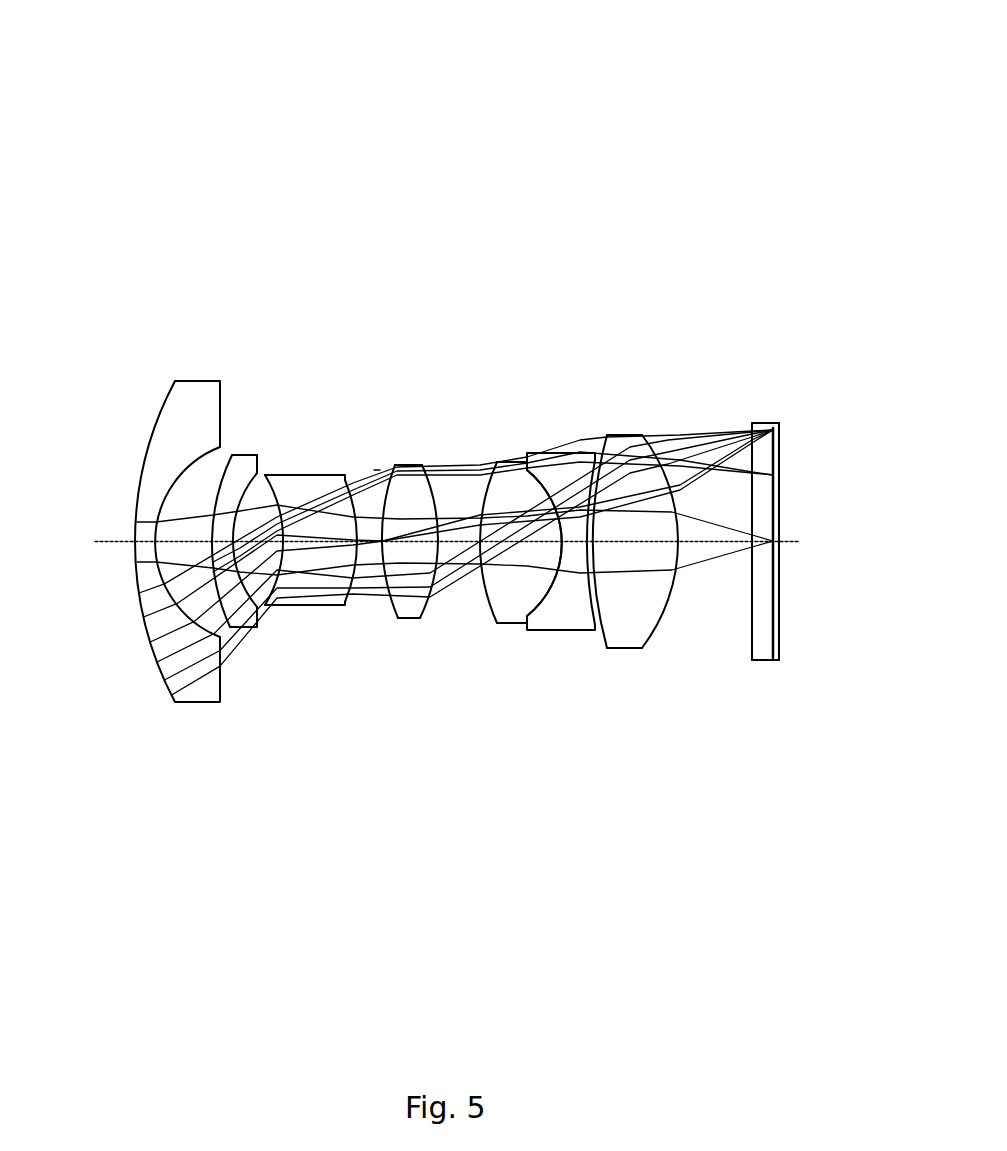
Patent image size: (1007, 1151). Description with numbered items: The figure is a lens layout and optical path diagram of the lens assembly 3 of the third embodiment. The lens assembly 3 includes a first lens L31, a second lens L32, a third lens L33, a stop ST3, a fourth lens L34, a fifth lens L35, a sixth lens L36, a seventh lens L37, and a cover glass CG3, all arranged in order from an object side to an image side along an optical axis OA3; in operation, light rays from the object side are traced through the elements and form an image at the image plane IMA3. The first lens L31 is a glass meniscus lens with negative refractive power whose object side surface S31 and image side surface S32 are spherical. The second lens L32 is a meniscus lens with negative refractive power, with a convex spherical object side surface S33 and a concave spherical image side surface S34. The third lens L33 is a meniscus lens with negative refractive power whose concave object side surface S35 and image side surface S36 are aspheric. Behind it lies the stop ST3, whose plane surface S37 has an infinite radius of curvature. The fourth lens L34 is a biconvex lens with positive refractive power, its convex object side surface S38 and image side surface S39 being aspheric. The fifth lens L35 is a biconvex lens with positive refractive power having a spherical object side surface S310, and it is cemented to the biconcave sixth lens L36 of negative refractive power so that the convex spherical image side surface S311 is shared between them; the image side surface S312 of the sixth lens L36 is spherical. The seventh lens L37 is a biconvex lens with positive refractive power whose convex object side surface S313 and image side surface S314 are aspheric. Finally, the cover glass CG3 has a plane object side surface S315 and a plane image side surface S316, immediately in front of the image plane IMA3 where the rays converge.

The lens assembly 3 is at (88, 31).
The first lens L31 is at (141, 487).
The second lens L32 is at (236, 520).
The third lens L33 is at (326, 563).
The fourth lens L34 is at (442, 544).
The fifth lens L35 is at (528, 528).
The sixth lens L36 is at (647, 558).
The seventh lens L37 is at (717, 534).
The stop ST3 is at (392, 310).
The cover glass CG3 is at (784, 502).
The image plane IMA3 is at (805, 449).
The optical axis OA3 is at (107, 542).
The object side surface of the first lens S31 is at (150, 645).
The image side surface of the first lens S32 is at (200, 697).
The object side surface of the second lens S33 is at (250, 631).
The image side surface of the second lens S34 is at (238, 631).
The object side surface of the third lens S35 is at (301, 607).
The image side surface of the third lens S36 is at (330, 610).
The stop surface S37 is at (393, 588).
The object side surface of the fourth lens S38 is at (430, 598).
The image side surface of the fourth lens S39 is at (438, 606).
The object side surface of the fifth lens S310 is at (492, 600).
The image side surface of the fifth lens S311 is at (611, 683).
The image side surface of the sixth lens S312 is at (671, 691).
The object side surface of the seventh lens S313 is at (706, 655).
The image side surface of the seventh lens S314 is at (741, 634).
The object side surface of the cover glass S315 is at (749, 622).
The image side surface of the cover glass S316 is at (770, 638).